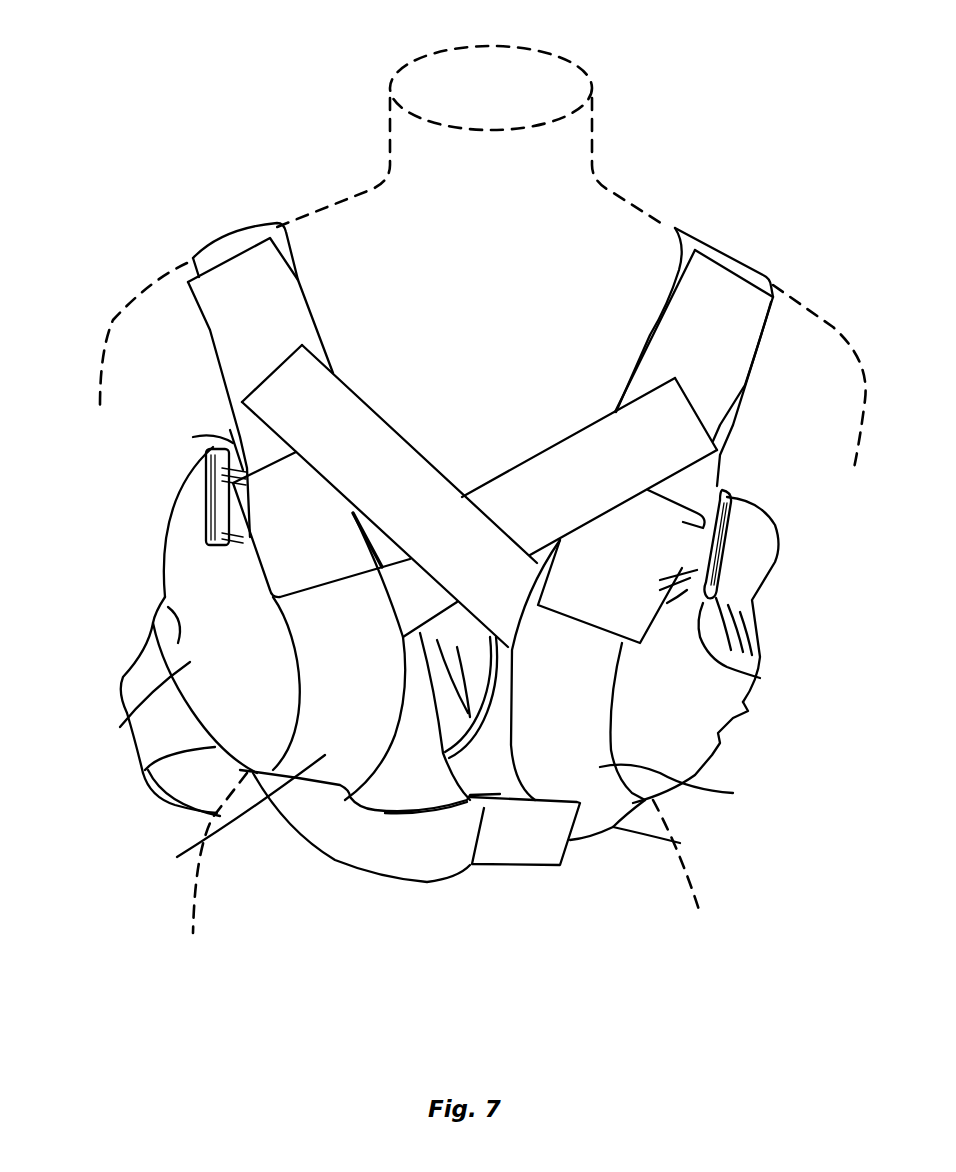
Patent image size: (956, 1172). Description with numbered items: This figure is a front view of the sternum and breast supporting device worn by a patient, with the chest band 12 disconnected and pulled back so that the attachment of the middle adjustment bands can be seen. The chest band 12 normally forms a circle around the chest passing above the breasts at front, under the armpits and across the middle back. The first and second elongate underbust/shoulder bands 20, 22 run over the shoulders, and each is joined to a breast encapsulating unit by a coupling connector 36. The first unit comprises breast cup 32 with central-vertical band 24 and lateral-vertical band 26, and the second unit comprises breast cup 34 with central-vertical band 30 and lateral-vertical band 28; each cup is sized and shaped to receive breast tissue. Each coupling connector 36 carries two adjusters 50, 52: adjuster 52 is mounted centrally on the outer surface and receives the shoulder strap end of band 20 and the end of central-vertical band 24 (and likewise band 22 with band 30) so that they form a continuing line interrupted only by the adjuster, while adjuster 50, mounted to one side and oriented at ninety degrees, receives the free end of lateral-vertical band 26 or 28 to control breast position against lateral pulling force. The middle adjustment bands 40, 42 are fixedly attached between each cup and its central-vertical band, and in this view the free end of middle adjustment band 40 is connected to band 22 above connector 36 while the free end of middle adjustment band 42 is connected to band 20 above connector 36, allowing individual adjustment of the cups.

The chest band 12 is at (152, 797).
The first elongate underbust/shoulder band 20 is at (237, 233).
The second elongate underbust/shoulder band 22 is at (735, 262).
The central-vertical band 24 is at (240, 817).
The lateral-vertical band 26 is at (165, 550).
The lateral-vertical band 28 is at (770, 583).
The central-vertical band 30 is at (664, 802).
The breast cup 32 is at (133, 719).
The breast cup 34 is at (747, 712).
The coupling connector 36 is at (193, 437).
The middle adjustment band 40 is at (562, 440).
The middle adjustment band 42 is at (400, 433).
The adjuster 50 is at (220, 543).
The adjuster 52 is at (222, 505).